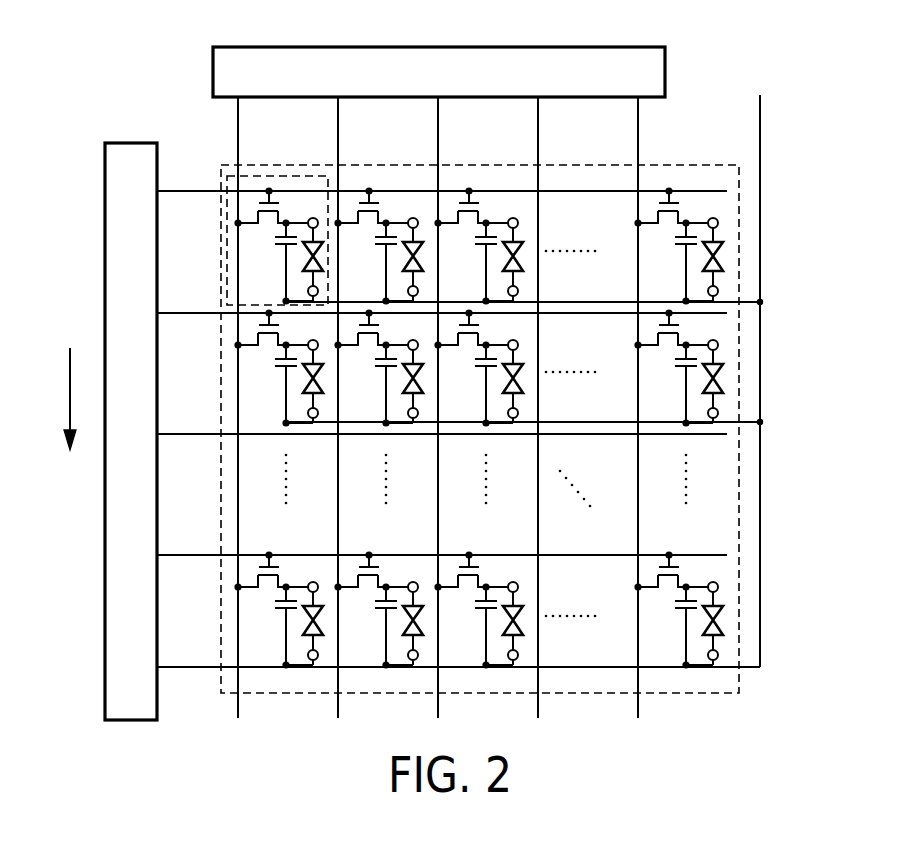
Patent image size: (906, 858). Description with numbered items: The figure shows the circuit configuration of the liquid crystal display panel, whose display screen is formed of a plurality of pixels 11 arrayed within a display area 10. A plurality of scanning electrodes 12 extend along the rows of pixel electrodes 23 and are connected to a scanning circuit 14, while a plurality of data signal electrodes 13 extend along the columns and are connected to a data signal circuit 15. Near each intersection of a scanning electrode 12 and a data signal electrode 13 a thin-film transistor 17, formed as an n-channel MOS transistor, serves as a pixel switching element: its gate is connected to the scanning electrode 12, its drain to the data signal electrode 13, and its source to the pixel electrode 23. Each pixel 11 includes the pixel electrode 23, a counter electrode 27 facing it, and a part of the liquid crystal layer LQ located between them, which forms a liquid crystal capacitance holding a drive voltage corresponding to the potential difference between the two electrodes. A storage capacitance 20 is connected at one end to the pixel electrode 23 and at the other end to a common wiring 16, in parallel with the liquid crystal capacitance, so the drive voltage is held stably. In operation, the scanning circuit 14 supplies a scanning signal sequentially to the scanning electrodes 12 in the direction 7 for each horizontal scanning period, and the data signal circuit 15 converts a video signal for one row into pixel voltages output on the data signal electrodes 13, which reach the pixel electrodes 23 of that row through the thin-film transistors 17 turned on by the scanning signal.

The direction 7 is at (67, 388).
The display area 10 is at (290, 695).
The pixel 11 is at (233, 177).
The scanning electrode 12 is at (181, 190).
The data signal electrode 13 is at (658, 120).
The scanning circuit 14 is at (132, 142).
The data signal circuit 15 is at (667, 70).
The common wiring 16 is at (762, 600).
The thin-film transistor 17 is at (267, 228).
The storage capacitance 20 is at (275, 245).
The pixel electrode 23 is at (313, 217).
The counter electrode 27 is at (306, 292).
The liquid crystal layer LQ is at (303, 258).